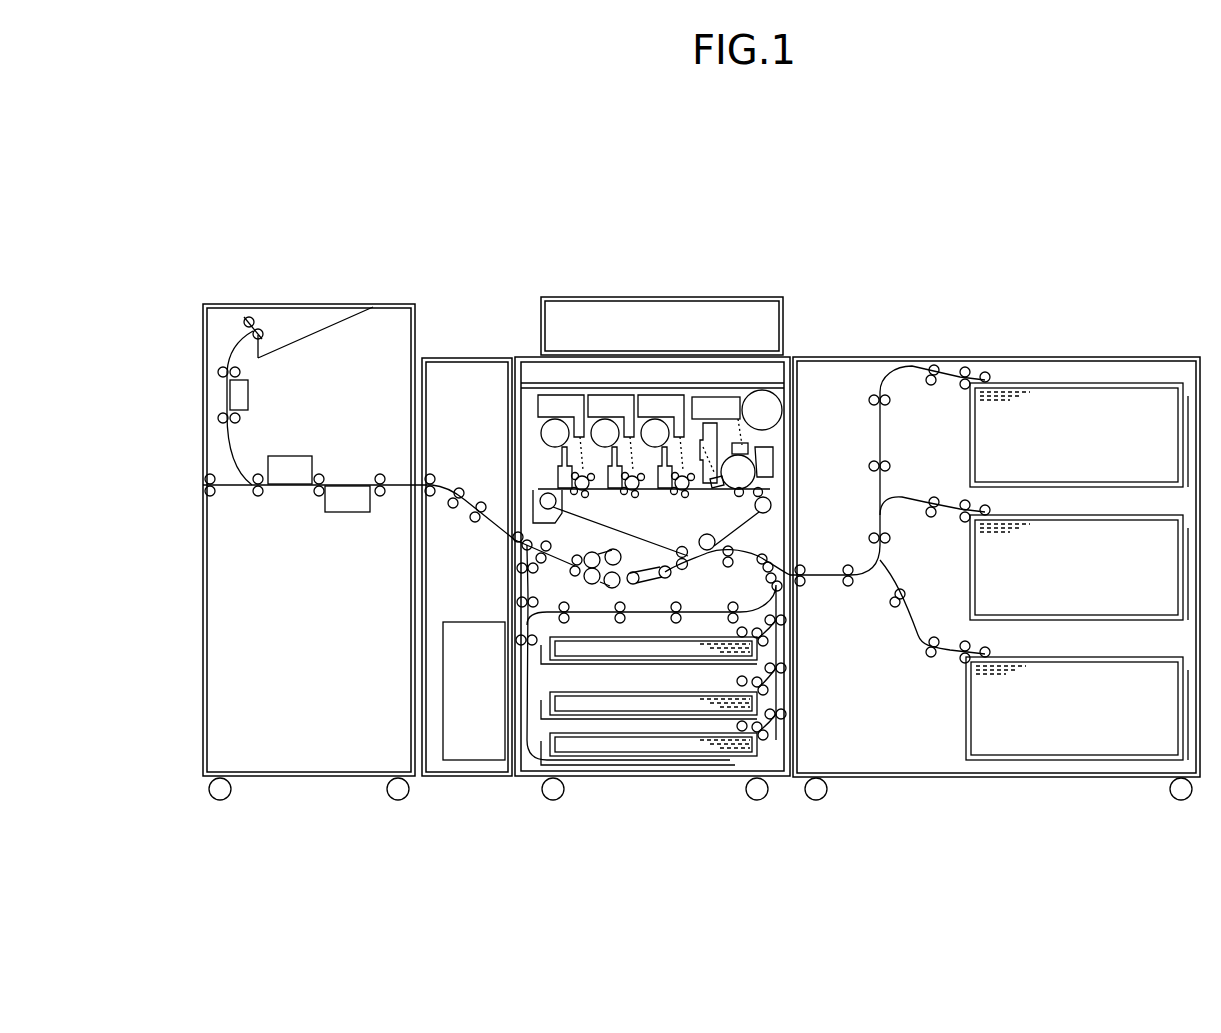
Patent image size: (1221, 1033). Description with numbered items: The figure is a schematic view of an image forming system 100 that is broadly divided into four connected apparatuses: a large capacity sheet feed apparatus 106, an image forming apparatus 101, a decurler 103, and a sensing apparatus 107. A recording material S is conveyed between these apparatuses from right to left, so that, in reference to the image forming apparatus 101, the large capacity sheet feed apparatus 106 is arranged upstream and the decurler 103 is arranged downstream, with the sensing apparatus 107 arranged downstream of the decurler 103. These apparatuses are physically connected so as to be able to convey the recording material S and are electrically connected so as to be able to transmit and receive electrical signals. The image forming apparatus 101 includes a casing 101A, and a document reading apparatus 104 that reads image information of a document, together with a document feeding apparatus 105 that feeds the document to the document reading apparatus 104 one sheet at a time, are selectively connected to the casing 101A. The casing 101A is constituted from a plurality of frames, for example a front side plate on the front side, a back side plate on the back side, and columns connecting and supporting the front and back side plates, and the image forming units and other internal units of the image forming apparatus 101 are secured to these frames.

The image forming system 100 is at (873, 220).
The image forming apparatus 101 is at (547, 383).
The casing 101A is at (697, 780).
The decurler 103 is at (461, 357).
The document reading apparatus 104 is at (548, 365).
The document feeding apparatus 105 is at (664, 297).
The large capacity sheet feed apparatus 106 is at (1005, 357).
The sensing apparatus 107 is at (305, 304).
The recording material S is at (1140, 386).